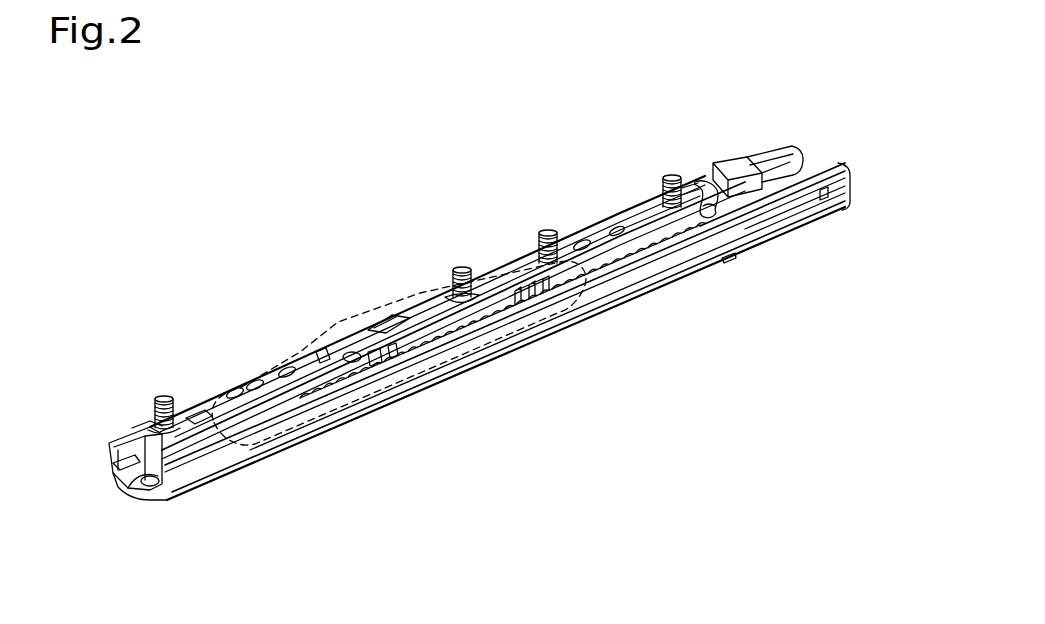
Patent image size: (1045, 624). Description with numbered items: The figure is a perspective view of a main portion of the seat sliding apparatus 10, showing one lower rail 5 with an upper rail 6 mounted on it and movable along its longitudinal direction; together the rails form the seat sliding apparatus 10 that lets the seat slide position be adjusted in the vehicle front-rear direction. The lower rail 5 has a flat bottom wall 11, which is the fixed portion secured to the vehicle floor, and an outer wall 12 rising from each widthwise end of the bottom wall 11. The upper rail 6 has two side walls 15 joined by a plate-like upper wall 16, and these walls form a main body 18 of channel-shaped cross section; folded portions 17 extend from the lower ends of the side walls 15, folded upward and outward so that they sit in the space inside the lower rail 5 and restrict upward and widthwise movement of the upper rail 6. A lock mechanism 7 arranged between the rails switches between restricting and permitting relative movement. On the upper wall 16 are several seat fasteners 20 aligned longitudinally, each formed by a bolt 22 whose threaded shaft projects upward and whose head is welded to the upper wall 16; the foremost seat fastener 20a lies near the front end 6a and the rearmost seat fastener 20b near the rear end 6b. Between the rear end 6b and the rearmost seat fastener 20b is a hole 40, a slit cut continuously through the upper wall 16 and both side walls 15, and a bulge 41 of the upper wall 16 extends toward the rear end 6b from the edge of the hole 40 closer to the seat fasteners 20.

The seat sliding apparatus 10 is at (240, 167).
The lower rail 5 is at (790, 148).
The upper rail 6 is at (732, 165).
The front end 6a is at (134, 428).
The rear end 6b is at (757, 163).
The lock mechanism 7 is at (338, 324).
The bottom wall 11 is at (140, 490).
The outer wall 12 is at (253, 443).
The side wall 15 is at (622, 260).
The upper wall 16 is at (597, 237).
The folded portion 17 is at (113, 463).
The main body 18 is at (737, 177).
The seat fastener 20 is at (546, 230).
The foremost seat fastener 20a is at (170, 396).
The rearmost seat fastener 20b is at (660, 177).
The bolt 22 is at (501, 266).
The hole 40 is at (722, 215).
The bulge 41 is at (704, 186).